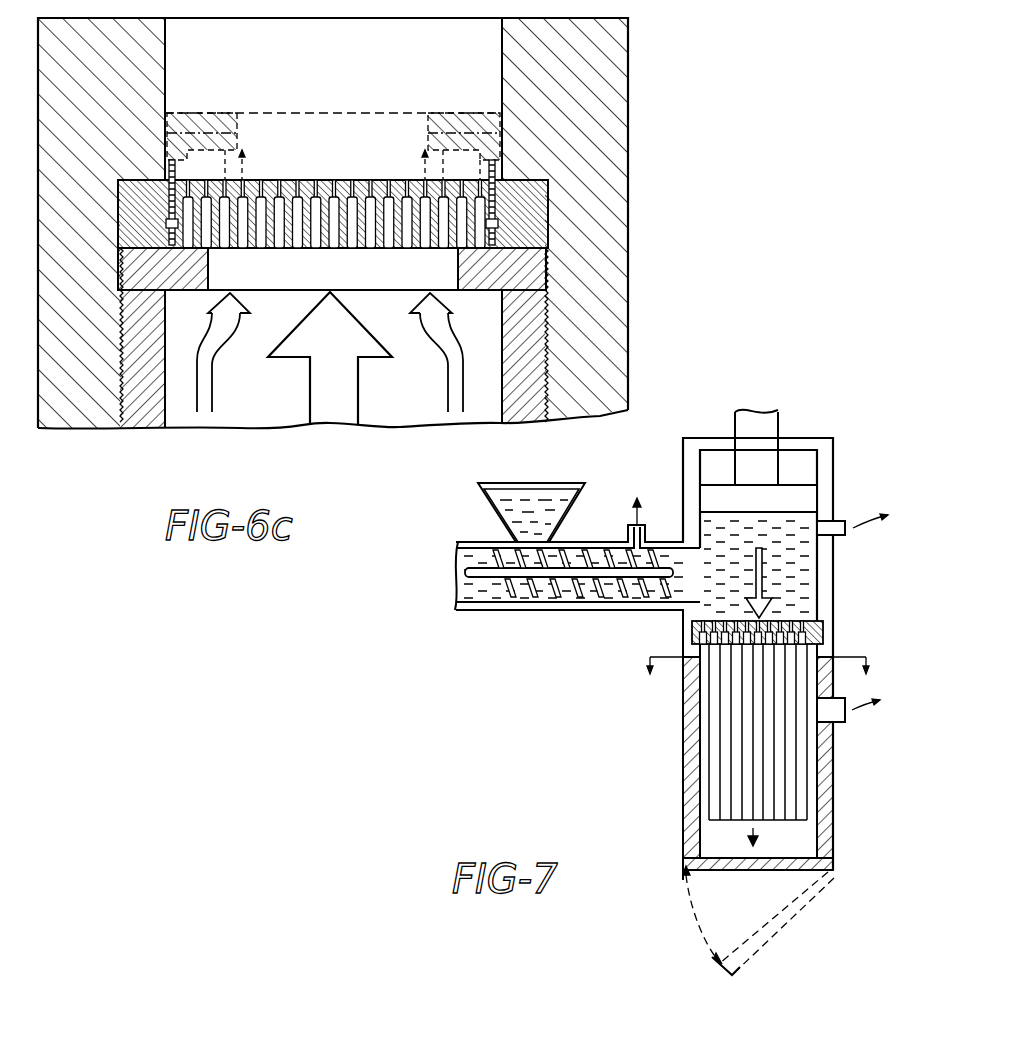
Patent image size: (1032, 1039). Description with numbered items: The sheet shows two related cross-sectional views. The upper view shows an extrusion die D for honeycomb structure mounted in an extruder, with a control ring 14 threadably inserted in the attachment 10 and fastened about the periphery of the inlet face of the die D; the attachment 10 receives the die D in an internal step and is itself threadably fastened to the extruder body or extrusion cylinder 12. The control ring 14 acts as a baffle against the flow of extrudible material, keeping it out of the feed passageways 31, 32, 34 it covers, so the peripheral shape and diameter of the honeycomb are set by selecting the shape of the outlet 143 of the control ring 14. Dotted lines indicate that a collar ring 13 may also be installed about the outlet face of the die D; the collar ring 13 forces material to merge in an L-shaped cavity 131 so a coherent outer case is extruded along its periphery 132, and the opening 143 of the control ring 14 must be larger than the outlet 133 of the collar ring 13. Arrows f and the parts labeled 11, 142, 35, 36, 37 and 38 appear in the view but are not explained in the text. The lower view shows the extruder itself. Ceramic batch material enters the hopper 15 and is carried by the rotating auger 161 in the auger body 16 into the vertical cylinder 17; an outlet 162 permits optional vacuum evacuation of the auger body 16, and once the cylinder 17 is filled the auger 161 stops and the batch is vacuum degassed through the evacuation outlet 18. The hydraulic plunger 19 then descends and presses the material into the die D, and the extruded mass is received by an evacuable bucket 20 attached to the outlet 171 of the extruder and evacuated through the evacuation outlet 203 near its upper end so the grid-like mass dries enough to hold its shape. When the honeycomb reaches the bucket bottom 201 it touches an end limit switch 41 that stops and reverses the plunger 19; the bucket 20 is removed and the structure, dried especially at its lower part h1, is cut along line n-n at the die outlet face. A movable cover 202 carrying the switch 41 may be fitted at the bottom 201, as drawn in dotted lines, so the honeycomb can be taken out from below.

In FIG. 6C, the attachment 10 is at (598, 49).
In FIG. 6C, the die holder recess 11 is at (552, 180).
In FIG. 6C, the extruder body 12 is at (508, 402).
In FIG. 6C, the collar ring 13 is at (205, 113).
In FIG. 6C, the control ring 14 is at (163, 273).
In FIG. 6C, the L-shaped cavity 131 is at (455, 168).
In FIG. 6C, the periphery of collar ring 132 is at (466, 112).
In FIG. 6C, the outlet of collar ring 133 is at (290, 115).
In FIG. 6C, the support plate 142 is at (212, 280).
In FIG. 6C, the outlet of control ring 143 is at (332, 276).
In FIG. 6C, the feed passageway 31 is at (482, 240).
In FIG. 6C, the feed passageway 32 is at (463, 245).
In FIG. 6C, the feed passageway 34 is at (190, 237).
In FIG. 6C, the die pin 35 is at (205, 233).
In FIG. 6C, the die pin 36 is at (423, 242).
In FIG. 6C, the die pin 37 is at (216, 244).
In FIG. 6C, the die pin 38 is at (243, 243).
In FIG. 6C, the extrusion die D is at (555, 218).
In FIG. 7, the extrusion die D is at (822, 632).
In FIG. 6C, the flow direction f is at (330, 358).
In FIG. 7, the hopper 15 is at (536, 487).
In FIG. 7, the auger body 16 is at (547, 610).
In FIG. 7, the auger 161 is at (615, 572).
In FIG. 7, the outlet 162 is at (647, 525).
In FIG. 7, the vertical cylinder 17 is at (797, 573).
In FIG. 7, the outlet of extruder 171 is at (822, 662).
In FIG. 7, the evacuation outlet 18 is at (850, 532).
In FIG. 7, the hydraulic plunger 19 is at (795, 500).
In FIG. 7, the bucket 20 is at (830, 780).
In FIG. 7, the bucket bottom 201 is at (803, 848).
In FIG. 7, the movable cover 202 is at (762, 945).
In FIG. 7, the evacuation outlet 203 is at (850, 720).
In FIG. 7, the end limit switch 41 is at (753, 855).
In FIG. 7, the lower part of honeycomb structure h1 is at (777, 813).
In FIG. 7, the cutting line n is at (757, 679).